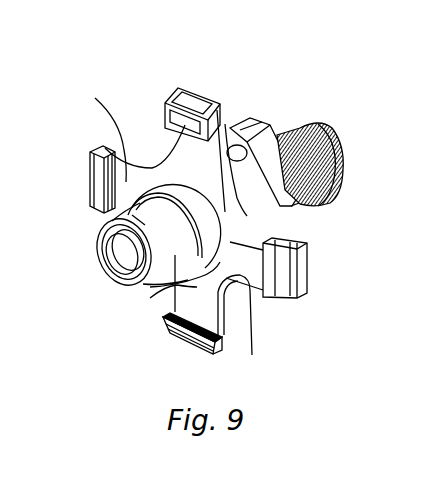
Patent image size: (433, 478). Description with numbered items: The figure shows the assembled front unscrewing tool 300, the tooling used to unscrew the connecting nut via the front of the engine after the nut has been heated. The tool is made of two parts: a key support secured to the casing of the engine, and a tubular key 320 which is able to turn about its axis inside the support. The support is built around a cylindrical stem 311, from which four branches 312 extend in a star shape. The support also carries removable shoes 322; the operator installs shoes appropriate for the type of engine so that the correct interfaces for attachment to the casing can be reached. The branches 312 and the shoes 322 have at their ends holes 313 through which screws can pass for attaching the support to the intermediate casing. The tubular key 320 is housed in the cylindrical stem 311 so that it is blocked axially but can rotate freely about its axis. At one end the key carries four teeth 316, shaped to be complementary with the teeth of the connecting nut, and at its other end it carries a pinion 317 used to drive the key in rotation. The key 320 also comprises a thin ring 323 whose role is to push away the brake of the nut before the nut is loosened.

The front unscrewing tool 300 is at (162, 351).
The cylindrical stem 311 is at (176, 303).
The branches 312 is at (185, 140).
The holes 313 is at (300, 290).
The teeth 316 is at (102, 248).
The pinion 317 is at (293, 138).
The tubular key 320 is at (130, 200).
The removable shoes 322 is at (168, 320).
The thin ring 323 is at (112, 268).